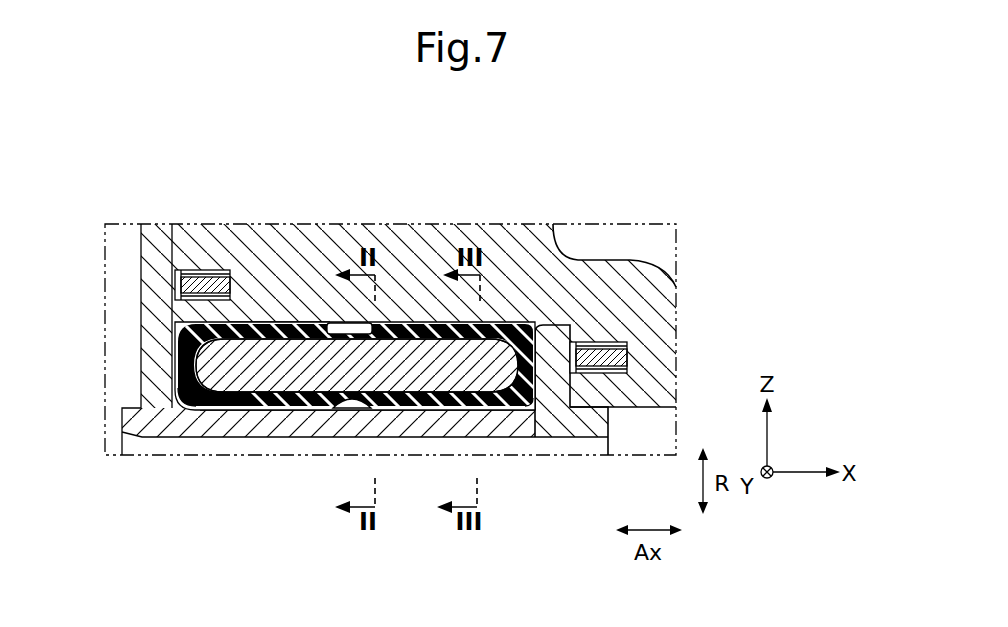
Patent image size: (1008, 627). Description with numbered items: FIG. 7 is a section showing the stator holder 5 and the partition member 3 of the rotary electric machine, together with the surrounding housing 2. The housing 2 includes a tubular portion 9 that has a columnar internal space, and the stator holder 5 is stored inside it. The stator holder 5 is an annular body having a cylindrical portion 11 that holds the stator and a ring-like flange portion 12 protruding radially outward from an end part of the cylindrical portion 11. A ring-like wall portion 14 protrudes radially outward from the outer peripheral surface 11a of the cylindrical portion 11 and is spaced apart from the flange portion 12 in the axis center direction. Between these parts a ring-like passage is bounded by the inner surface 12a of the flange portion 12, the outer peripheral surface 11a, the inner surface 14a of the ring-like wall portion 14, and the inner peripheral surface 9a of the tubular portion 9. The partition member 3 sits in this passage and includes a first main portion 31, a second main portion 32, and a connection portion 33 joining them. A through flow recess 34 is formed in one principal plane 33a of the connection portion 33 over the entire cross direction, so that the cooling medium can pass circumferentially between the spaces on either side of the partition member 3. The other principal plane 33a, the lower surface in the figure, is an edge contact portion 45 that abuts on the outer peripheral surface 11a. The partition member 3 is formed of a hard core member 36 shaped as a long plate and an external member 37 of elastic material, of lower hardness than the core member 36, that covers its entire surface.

The housing 2 is at (450, 236).
The partition member 3 is at (220, 322).
The stator holder 5 is at (118, 417).
The tubular portion 9 is at (282, 320).
The inner peripheral surface 9a is at (290, 336).
The cylindrical portion 11 is at (222, 425).
The outer peripheral surface 11a is at (263, 408).
The flange portion 12 is at (160, 222).
The inner surface 12a is at (180, 352).
The ring-like wall portion 14 is at (548, 325).
The inner surface 14a is at (518, 375).
The first main portion 31 is at (210, 300).
The second main portion 32 is at (497, 323).
The connection portion 33 is at (330, 398).
The principal plane 33a is at (388, 323).
The through flow recess 34 is at (345, 322).
The core member 36 is at (197, 388).
The external member 37 is at (477, 400).
The edge contact portion 45 is at (350, 406).